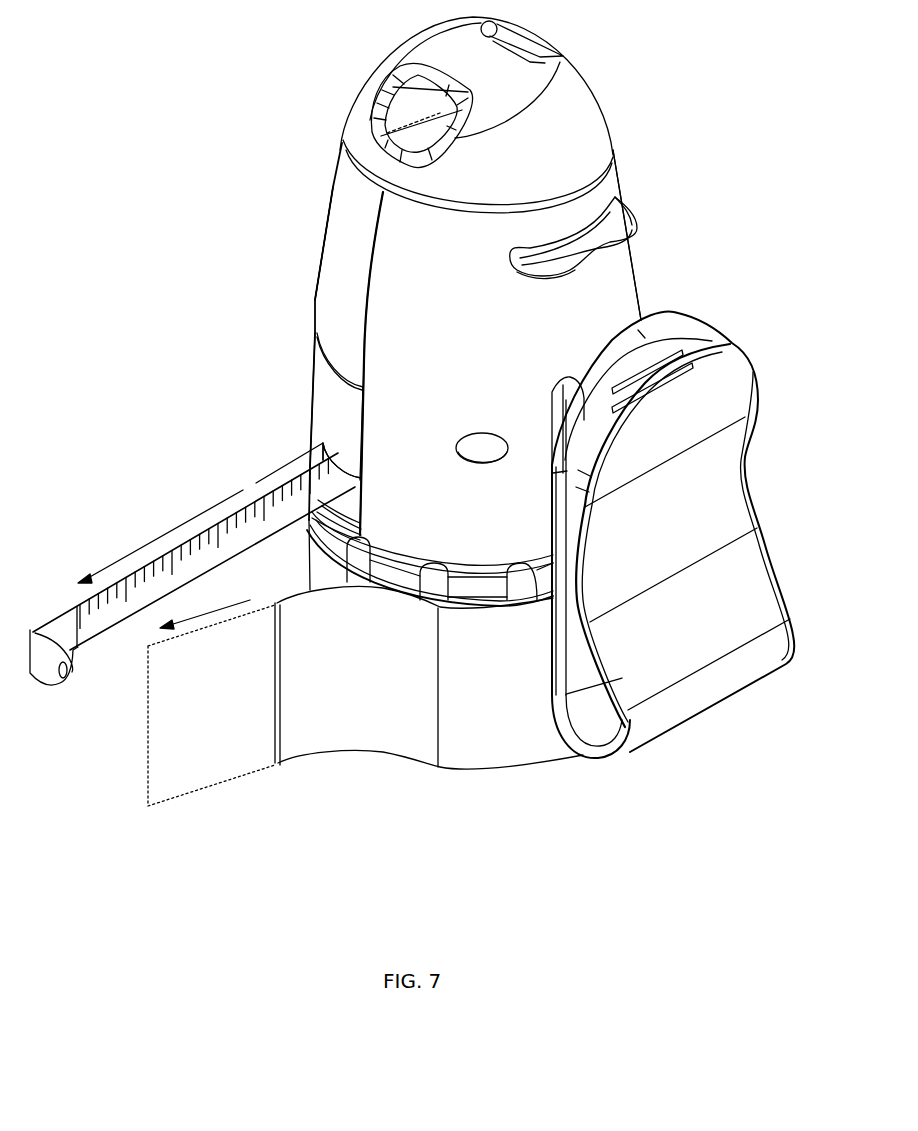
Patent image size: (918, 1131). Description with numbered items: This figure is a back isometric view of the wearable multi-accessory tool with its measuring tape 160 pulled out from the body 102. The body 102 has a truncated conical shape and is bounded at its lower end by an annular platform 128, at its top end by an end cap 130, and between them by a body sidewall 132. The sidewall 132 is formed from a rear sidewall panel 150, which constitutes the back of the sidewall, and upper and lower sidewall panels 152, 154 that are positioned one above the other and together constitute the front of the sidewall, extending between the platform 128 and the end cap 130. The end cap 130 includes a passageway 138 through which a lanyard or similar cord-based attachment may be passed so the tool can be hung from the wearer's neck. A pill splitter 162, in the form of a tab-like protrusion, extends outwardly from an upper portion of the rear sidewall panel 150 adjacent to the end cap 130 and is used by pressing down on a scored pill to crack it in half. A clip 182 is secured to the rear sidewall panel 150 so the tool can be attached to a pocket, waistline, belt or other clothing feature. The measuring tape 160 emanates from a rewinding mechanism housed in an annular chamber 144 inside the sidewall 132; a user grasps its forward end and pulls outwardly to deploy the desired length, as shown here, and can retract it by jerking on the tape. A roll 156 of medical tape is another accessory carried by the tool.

The body 102 is at (646, 286).
The platform 128 is at (397, 573).
The end cap 130 is at (600, 97).
The body sidewall 132 is at (316, 298).
The passageway 138 is at (373, 120).
The annular chamber 144 is at (362, 500).
The rear sidewall panel 150 is at (517, 349).
The upper sidewall panel 152 is at (368, 272).
The lower sidewall panel 154 is at (352, 411).
The roll of medical tape 156 is at (510, 768).
The measuring tape 160 is at (278, 484).
The pill splitter 162 is at (637, 220).
The clip 182 is at (759, 345).